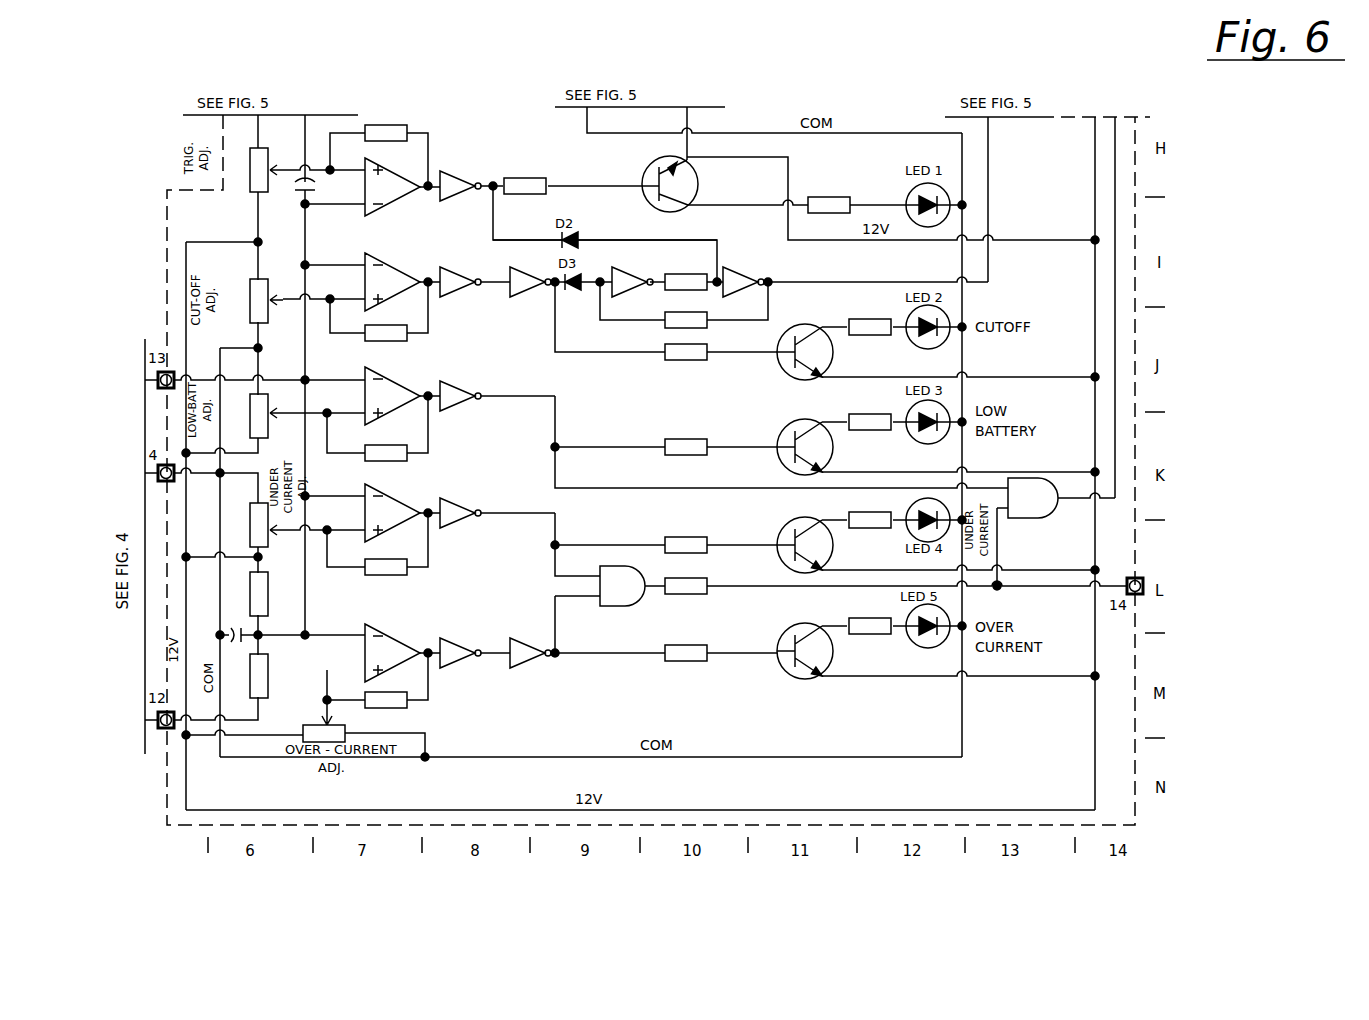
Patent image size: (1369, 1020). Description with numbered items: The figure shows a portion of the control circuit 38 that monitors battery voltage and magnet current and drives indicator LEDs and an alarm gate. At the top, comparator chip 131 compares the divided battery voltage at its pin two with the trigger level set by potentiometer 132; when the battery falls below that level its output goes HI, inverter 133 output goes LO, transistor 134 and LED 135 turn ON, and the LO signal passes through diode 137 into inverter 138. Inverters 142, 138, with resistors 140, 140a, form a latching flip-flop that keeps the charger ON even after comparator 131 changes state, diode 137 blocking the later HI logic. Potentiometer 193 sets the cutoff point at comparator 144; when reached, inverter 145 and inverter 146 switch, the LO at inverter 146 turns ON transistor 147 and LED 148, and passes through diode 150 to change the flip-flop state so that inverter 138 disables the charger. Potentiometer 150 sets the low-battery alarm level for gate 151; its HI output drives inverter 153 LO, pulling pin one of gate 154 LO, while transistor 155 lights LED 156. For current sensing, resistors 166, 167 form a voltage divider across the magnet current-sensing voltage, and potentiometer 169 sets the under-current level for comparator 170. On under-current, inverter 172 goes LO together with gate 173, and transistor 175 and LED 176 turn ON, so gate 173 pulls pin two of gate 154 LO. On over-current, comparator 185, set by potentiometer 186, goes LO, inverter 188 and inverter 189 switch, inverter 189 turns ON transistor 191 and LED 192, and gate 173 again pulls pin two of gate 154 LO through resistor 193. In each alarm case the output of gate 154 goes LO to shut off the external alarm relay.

The control circuit 38 is at (126, 848).
The comparator chip 131 is at (386, 204).
The potentiometer 132 is at (247, 184).
The inverter 133 is at (451, 172).
The transistor 134 is at (690, 178).
The LED 135 is at (908, 192).
The diode 137 is at (582, 238).
The inverter 138 is at (740, 268).
The resistor 140 is at (684, 274).
The resistor 140a is at (670, 328).
The inverter 142 is at (618, 274).
The comparator 144 is at (403, 268).
The inverter 145 is at (447, 270).
The inverter 146 is at (520, 296).
The transistor 147 is at (783, 369).
The LED 148 is at (935, 343).
The diode / potentiometer 150 is at (268, 417).
The gate 151 is at (403, 384).
The inverter 153 is at (455, 402).
The gate 154 is at (1040, 518).
The transistor 155 is at (783, 464).
The LED 156 is at (920, 436).
The resistor 166 is at (266, 684).
The resistor 167 is at (266, 596).
The potentiometer 169 is at (247, 524).
The comparator 170 is at (403, 502).
The inverter 172 is at (455, 520).
The gate 173 is at (620, 603).
The transistor 175 is at (786, 526).
The LED 176 is at (910, 508).
The comparator 185 is at (403, 642).
The potentiometer 186 is at (310, 716).
The inverter 188 is at (452, 665).
The inverter 189 is at (524, 665).
The transistor 191 is at (785, 672).
The LED 192 is at (921, 648).
The potentiometer / resistor 193 is at (255, 290).